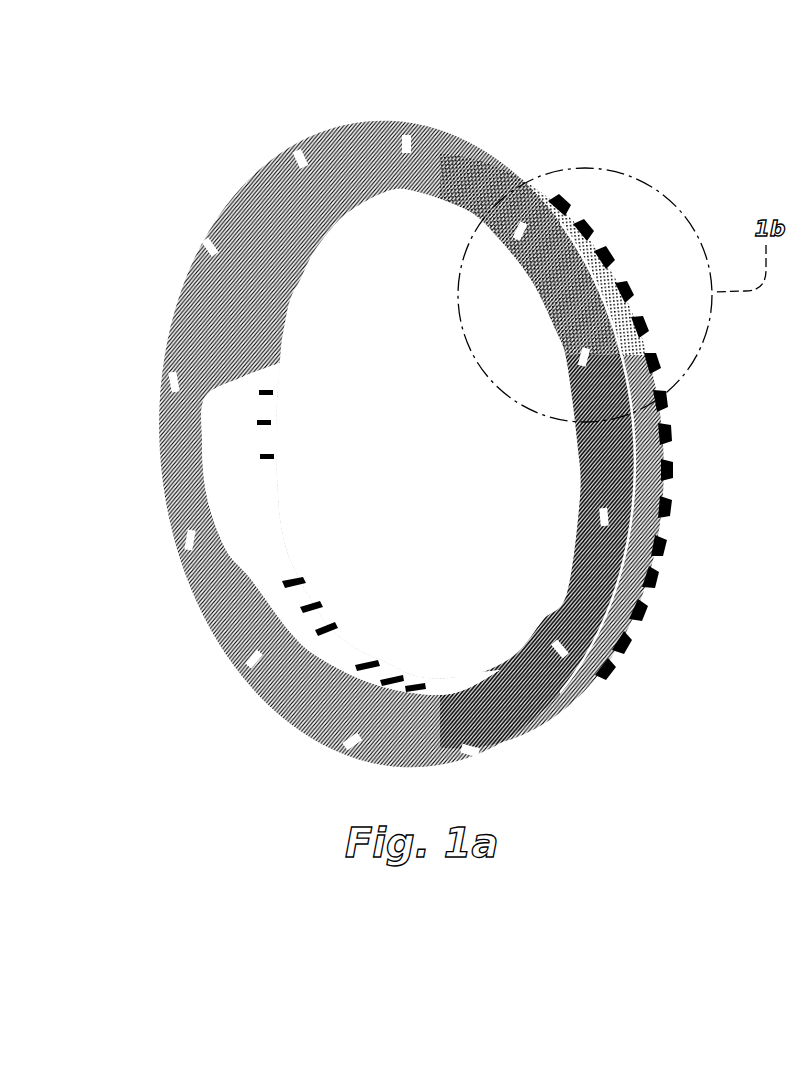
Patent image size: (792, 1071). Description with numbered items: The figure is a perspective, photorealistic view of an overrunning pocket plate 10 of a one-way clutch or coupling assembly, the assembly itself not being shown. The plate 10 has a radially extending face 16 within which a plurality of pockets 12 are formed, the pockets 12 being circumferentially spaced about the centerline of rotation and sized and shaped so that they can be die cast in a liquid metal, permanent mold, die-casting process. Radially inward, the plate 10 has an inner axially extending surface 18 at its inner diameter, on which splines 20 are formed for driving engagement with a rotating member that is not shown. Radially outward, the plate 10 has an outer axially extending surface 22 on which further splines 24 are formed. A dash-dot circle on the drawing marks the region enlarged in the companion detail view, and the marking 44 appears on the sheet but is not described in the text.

The overrunning pocket plate 10 is at (446, 432).
The pockets 12 is at (295, 158).
The radially extending face 16 is at (447, 148).
The inner axially extending surface 18 is at (240, 538).
The splines 20 is at (313, 253).
The outer axially extending surface 22 is at (640, 445).
The splines 24 is at (605, 258).
The sheet marker 44 is at (775, 725).